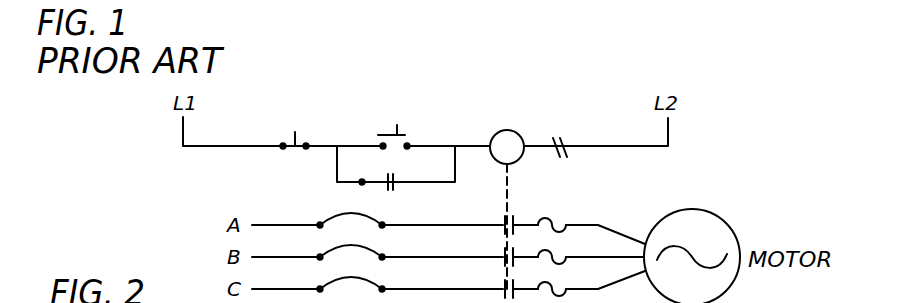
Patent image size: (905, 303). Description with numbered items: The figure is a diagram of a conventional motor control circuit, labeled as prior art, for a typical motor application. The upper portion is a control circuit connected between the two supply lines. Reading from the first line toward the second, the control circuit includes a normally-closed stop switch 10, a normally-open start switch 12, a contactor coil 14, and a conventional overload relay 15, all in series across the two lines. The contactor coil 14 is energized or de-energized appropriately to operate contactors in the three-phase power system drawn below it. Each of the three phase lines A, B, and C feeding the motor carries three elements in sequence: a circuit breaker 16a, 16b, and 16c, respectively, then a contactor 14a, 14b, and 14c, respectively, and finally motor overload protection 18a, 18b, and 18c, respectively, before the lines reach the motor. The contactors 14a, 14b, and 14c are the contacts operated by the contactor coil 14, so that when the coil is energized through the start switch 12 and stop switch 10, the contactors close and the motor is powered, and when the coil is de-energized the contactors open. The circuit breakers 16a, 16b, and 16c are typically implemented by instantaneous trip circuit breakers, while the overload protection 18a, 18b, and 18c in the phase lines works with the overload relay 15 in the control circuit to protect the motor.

The stop switch 10 is at (295, 132).
The start switch 12 is at (397, 125).
The contactor coil 14 is at (496, 133).
The overload relay 15 is at (551, 133).
The contactor 14a is at (503, 218).
The contactor 14b is at (503, 250).
The contactor 14c is at (503, 282).
The circuit breaker 16a is at (333, 216).
The circuit breaker 16b is at (333, 248).
The circuit breaker 16c is at (333, 280).
The motor overload protection 18a is at (572, 215).
The motor overload protection 18b is at (572, 247).
The motor overload protection 18c is at (572, 279).